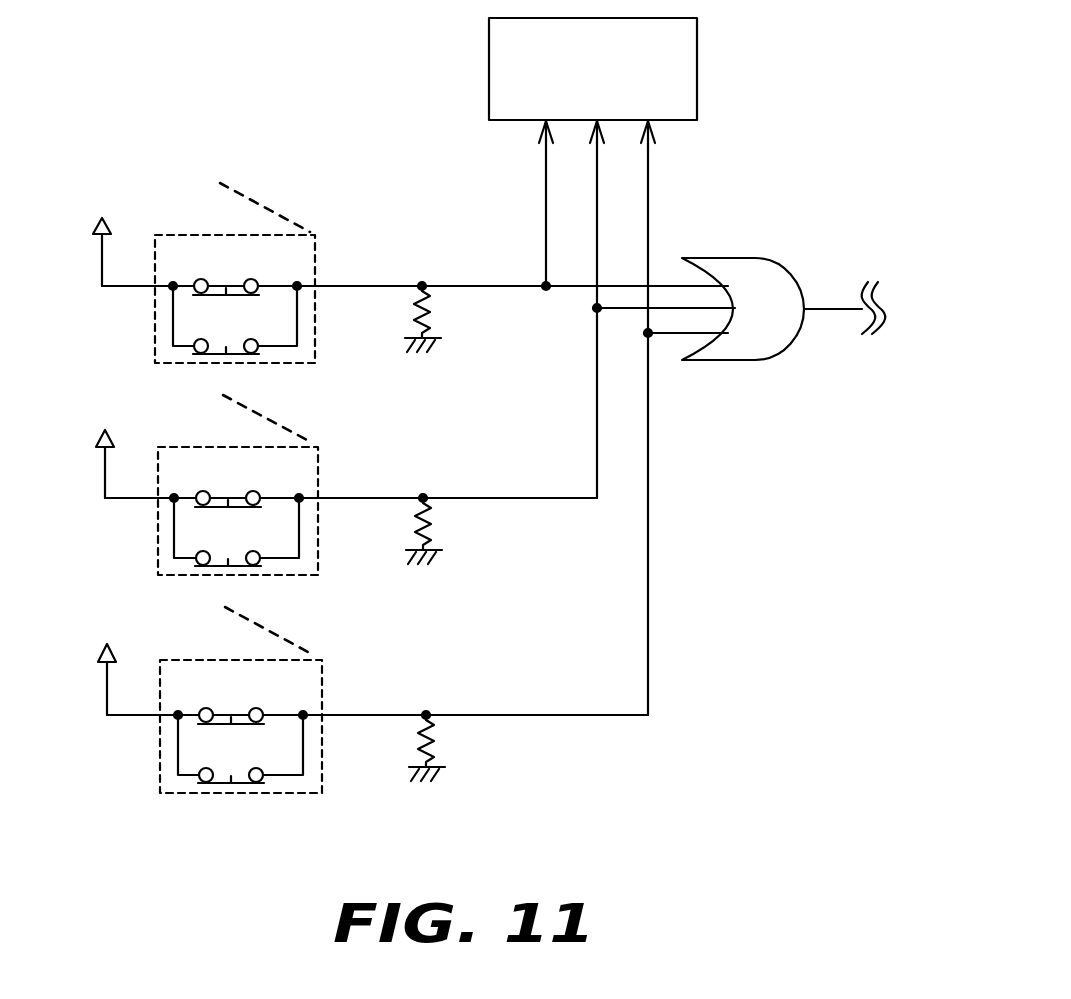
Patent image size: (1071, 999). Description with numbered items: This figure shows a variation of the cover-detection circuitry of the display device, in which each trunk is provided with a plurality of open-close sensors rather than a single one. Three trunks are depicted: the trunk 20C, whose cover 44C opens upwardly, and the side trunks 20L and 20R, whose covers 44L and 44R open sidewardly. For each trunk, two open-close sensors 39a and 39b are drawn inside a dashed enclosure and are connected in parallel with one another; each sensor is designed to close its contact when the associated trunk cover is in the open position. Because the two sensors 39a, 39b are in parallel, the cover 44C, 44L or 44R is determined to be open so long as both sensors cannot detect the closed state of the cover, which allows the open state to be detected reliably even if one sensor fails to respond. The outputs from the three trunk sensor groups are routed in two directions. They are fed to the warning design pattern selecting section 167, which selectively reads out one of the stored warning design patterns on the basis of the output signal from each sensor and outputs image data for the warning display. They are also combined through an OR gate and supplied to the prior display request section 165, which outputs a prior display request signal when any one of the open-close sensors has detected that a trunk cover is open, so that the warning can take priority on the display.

The warning design pattern selecting section 167 is at (510, 120).
The prior display request section 165 is at (735, 257).
The trunk 20C is at (163, 333).
The side trunk 20L is at (167, 545).
The side trunk 20R is at (168, 763).
The cover 44C is at (265, 211).
The cover 44L is at (270, 420).
The cover 44R is at (273, 633).
The open-close sensor 39a is at (205, 280).
The open-close sensor 39b is at (205, 340).